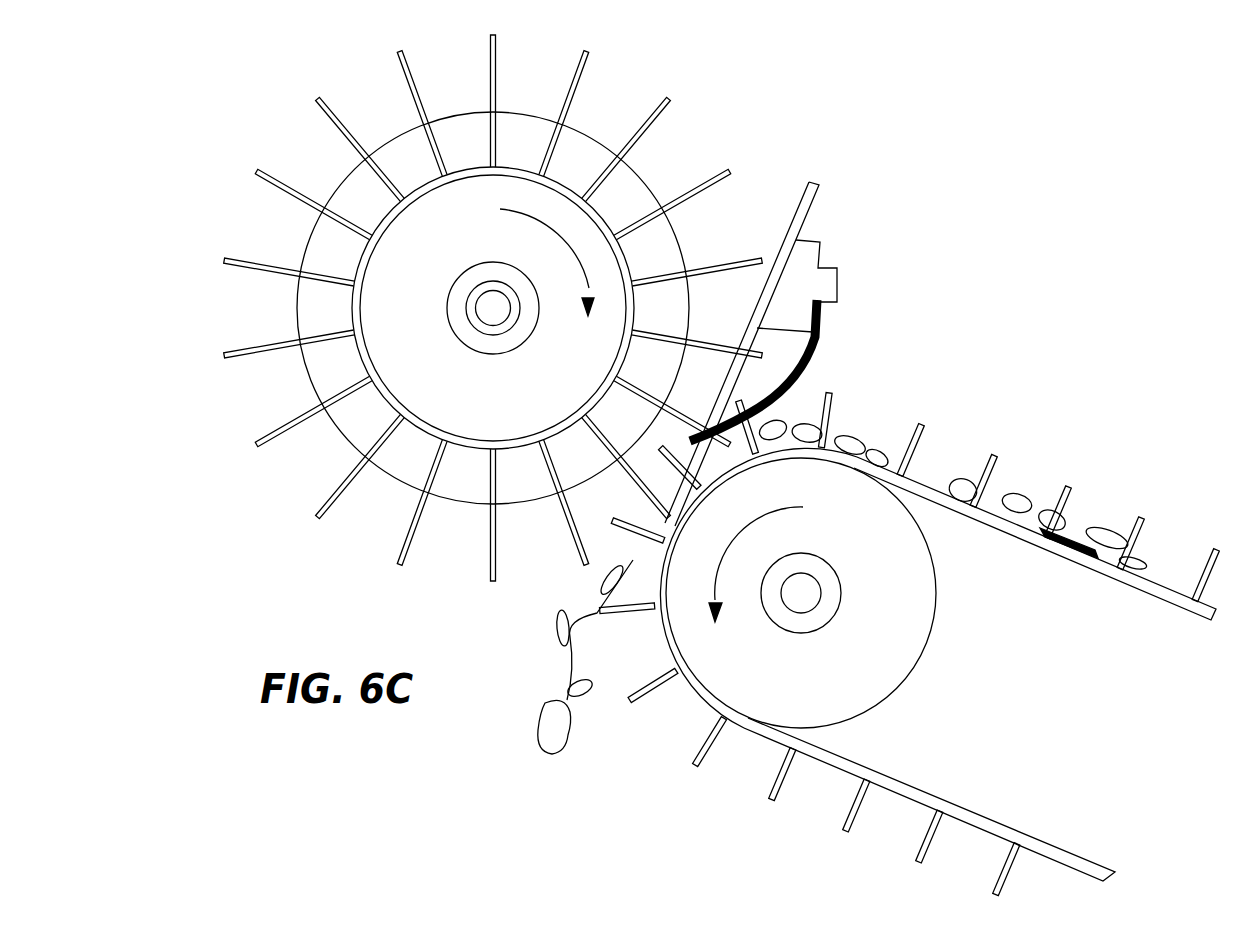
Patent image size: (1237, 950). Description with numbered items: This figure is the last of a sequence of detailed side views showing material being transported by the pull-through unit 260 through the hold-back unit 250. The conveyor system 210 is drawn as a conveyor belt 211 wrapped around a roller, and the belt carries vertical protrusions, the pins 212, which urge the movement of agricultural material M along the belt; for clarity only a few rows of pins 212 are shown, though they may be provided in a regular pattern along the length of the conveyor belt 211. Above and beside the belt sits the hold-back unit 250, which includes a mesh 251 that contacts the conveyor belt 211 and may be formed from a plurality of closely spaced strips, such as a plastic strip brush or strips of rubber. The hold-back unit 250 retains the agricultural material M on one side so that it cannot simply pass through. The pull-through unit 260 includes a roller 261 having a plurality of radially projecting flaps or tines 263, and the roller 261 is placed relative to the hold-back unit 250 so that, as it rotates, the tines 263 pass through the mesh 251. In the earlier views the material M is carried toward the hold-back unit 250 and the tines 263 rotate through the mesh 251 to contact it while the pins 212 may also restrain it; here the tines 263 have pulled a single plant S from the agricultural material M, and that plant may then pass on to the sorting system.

The pull-through unit 260 is at (476, 308).
The roller 261 is at (355, 355).
The tines 263 is at (280, 277).
The hold-back unit 250 is at (807, 154).
The mesh 251 is at (818, 352).
The conveyor system 210 is at (910, 527).
The conveyor belt 211 is at (1122, 585).
The pins 212 is at (840, 413).
The agricultural material M is at (1005, 384).
The single plant S is at (518, 767).